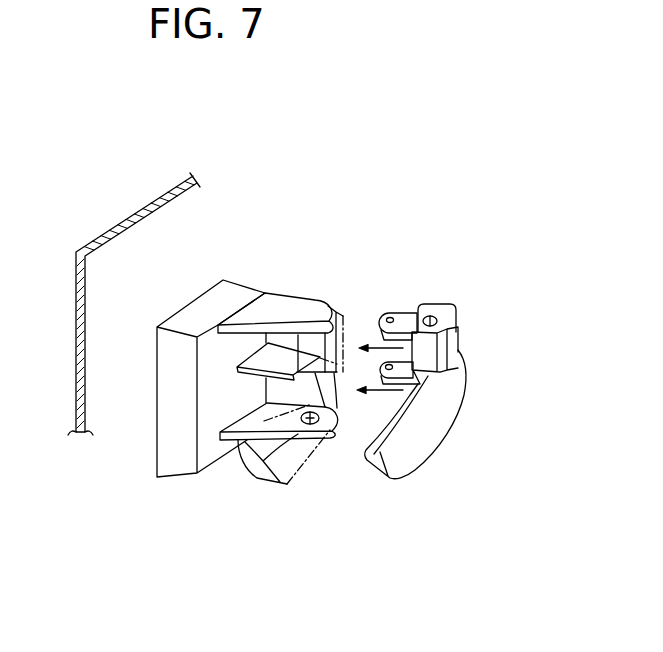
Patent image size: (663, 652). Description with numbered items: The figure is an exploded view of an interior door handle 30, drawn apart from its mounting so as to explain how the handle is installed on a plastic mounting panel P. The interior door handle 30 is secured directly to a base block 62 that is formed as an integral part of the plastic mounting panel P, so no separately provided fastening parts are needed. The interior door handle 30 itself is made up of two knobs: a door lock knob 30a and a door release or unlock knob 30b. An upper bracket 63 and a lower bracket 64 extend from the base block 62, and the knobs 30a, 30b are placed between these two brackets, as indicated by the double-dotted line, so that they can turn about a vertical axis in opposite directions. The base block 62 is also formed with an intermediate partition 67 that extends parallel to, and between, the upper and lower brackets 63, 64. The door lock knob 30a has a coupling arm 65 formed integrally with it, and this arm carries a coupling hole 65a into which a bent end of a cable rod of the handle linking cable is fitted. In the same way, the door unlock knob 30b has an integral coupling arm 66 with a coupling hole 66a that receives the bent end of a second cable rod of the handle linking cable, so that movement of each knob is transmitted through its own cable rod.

The plastic mounting panel P is at (146, 232).
The interior door handle 30 is at (459, 333).
The door lock knob 30a is at (455, 308).
The door release or unlock knob 30b is at (456, 395).
The base block 62 is at (220, 294).
The upper bracket 63 is at (283, 294).
The lower bracket 64 is at (243, 441).
The coupling arm 65 is at (402, 288).
The coupling hole 65a is at (393, 313).
The coupling arm 66 is at (416, 387).
The coupling hole 66a is at (343, 396).
The intermediate partition 67 is at (240, 357).